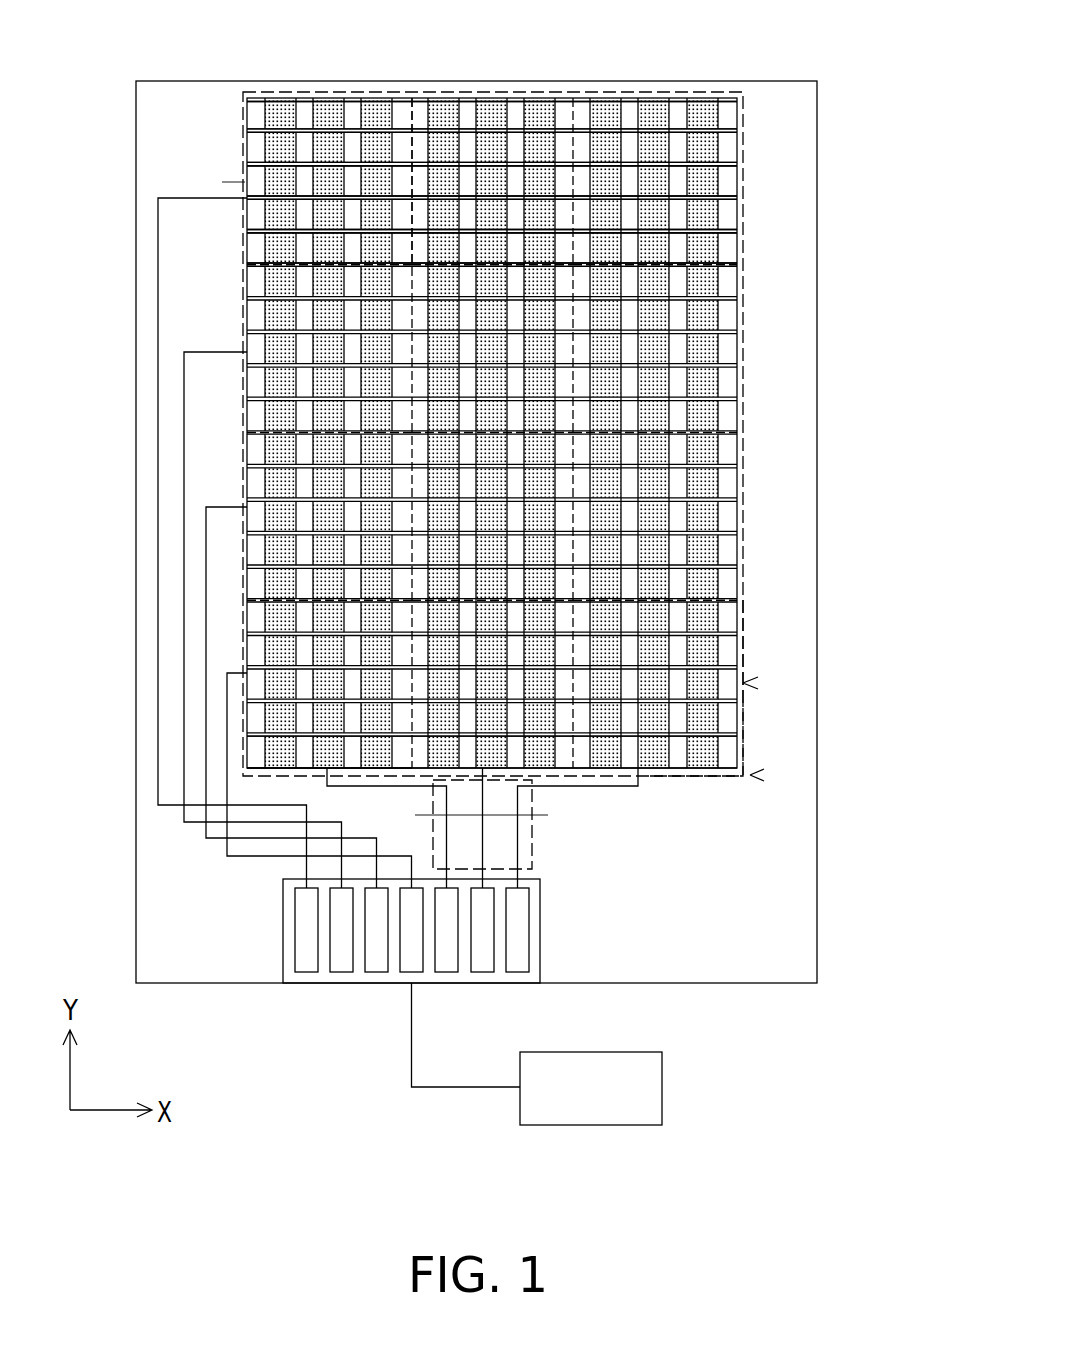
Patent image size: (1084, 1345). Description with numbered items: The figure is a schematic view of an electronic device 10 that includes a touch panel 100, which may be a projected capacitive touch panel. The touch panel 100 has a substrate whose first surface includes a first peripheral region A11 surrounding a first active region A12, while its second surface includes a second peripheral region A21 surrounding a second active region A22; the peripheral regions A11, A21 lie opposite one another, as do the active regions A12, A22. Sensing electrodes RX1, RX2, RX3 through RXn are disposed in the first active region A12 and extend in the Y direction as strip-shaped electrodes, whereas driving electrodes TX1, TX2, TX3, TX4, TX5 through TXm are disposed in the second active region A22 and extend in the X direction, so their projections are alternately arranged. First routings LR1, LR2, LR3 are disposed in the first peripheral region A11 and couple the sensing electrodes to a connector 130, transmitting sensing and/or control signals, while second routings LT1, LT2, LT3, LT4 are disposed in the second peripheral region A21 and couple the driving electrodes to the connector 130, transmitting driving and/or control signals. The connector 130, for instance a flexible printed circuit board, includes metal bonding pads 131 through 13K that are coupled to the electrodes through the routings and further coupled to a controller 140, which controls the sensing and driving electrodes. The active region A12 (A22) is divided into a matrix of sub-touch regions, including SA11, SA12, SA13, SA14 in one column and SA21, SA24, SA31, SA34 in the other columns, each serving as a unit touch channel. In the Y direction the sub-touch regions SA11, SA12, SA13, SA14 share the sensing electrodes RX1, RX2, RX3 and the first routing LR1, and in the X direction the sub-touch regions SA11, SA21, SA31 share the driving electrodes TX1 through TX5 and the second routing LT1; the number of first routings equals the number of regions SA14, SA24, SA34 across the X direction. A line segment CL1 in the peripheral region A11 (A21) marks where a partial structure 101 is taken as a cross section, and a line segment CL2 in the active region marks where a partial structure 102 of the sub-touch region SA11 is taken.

The electronic device 10 is at (902, 1181).
The touch panel 100 is at (816, 965).
The partial structure 101 is at (532, 867).
The partial structure 102 is at (431, 384).
The sub-touch region SA11 is at (243, 118).
The sub-touch region SA12 is at (242, 314).
The sub-touch region SA13 is at (242, 467).
The sub-touch region SA14 is at (242, 606).
The sub-touch region SA21 is at (542, 100).
The sub-touch region SA24 is at (585, 607).
The sub-touch region SA31 is at (657, 100).
The sub-touch region SA34 is at (737, 615).
The sensing electrode RX1 is at (275, 110).
The sensing electrode RX2 is at (328, 110).
The sensing electrode RX3 is at (382, 110).
The sensing electrode RXn is at (708, 110).
The driving electrode TX1 is at (727, 114).
The driving electrode TX2 is at (727, 152).
The driving electrode TX3 is at (727, 182).
The driving electrode TX4 is at (727, 215).
The driving electrode TX5 is at (730, 242).
The driving electrode TXm is at (728, 753).
The line segment CL1 is at (537, 842).
The line segment CL2 is at (425, 182).
The second routing LT1 is at (156, 264).
The second routing LT2 is at (184, 407).
The second routing LT3 is at (206, 546).
The second routing LT4 is at (227, 726).
The first routing LR1 is at (447, 800).
The first routing LR2 is at (482, 795).
The first routing LR3 is at (518, 790).
The first peripheral region A11 is at (796, 740).
The first active region A12 is at (845, 650).
The second peripheral region A21 is at (752, 774).
The second active region A22 is at (746, 683).
The connector 130 is at (305, 960).
The metal bonding pad 131 is at (308, 962).
The metal bonding pad 13K is at (518, 962).
The controller 140 is at (662, 1113).